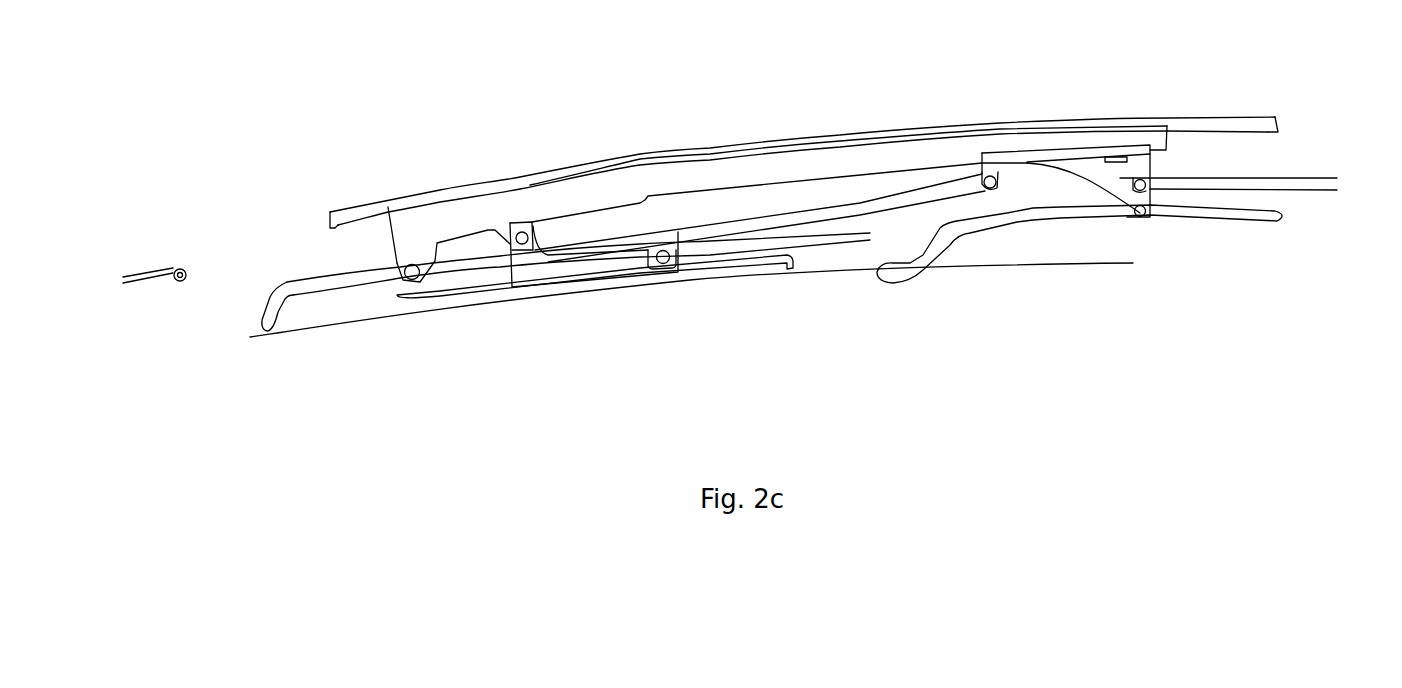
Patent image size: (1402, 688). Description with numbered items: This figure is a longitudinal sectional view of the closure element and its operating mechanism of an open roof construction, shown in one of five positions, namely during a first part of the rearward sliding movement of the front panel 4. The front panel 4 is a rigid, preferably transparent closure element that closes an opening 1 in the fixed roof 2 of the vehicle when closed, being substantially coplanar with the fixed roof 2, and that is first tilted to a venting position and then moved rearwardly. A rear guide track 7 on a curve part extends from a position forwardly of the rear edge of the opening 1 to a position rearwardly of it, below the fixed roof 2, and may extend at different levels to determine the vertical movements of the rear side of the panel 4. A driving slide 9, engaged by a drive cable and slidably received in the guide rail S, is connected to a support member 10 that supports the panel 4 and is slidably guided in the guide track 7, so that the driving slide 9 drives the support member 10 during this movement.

The opening 1 is at (270, 256).
The fixed roof 2 is at (166, 270).
The front panel 4 is at (1172, 130).
The rear guide track 7 is at (1028, 215).
The driving slide 9 is at (548, 268).
The support member 10 is at (1127, 182).
The guide rails S is at (1300, 185).